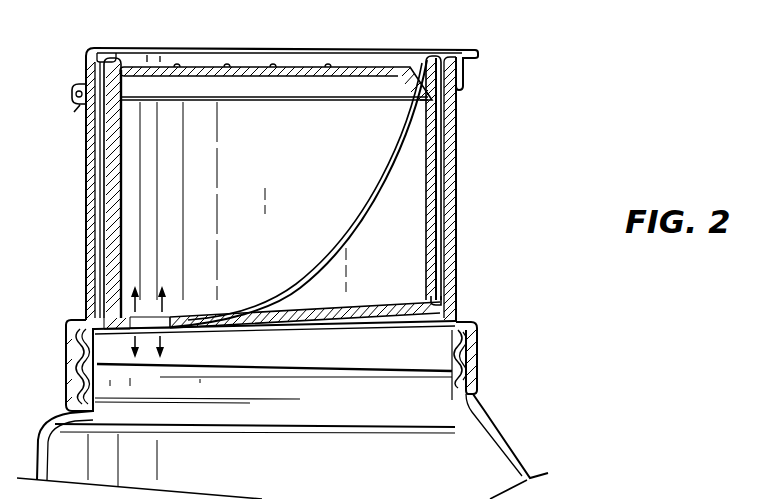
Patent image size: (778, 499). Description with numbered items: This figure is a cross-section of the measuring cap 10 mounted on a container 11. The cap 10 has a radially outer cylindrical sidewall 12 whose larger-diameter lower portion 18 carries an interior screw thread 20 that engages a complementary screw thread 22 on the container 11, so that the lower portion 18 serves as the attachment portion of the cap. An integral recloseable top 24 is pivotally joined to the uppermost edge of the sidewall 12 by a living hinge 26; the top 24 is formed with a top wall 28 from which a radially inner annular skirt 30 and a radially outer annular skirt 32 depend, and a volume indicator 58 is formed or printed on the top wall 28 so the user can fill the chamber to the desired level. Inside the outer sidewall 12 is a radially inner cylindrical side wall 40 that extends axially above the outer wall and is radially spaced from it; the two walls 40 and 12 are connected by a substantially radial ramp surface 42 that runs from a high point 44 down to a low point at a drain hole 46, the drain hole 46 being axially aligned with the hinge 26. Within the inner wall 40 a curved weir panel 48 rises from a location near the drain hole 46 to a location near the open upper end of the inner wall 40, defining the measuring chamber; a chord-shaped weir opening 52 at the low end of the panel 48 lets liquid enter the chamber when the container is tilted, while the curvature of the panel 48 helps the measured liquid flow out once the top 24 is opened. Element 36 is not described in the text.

The cap 10 is at (504, 129).
The container 11 is at (508, 457).
The radially outer cylindrical sidewall 12 is at (457, 241).
The lower portion of the side wall 18 is at (478, 409).
The interior screw thread 20 is at (469, 366).
The complementary screw thread 22 is at (453, 378).
The recloseable top 24 is at (258, 49).
The living hinge 26 is at (79, 106).
The top wall 28 is at (177, 63).
The radially inner annular skirt 30 is at (399, 74).
The radially outer annular skirt 32 is at (465, 83).
The lid lip 36 is at (468, 50).
The radially inner cylindrical side wall 40 is at (425, 222).
The ramp surface 42 is at (363, 303).
The high point 44 is at (443, 297).
The drain hole 46 is at (100, 309).
The curved weir panel 48 is at (372, 190).
The weir opening 52 is at (165, 321).
The volume indicator 58 is at (330, 65).